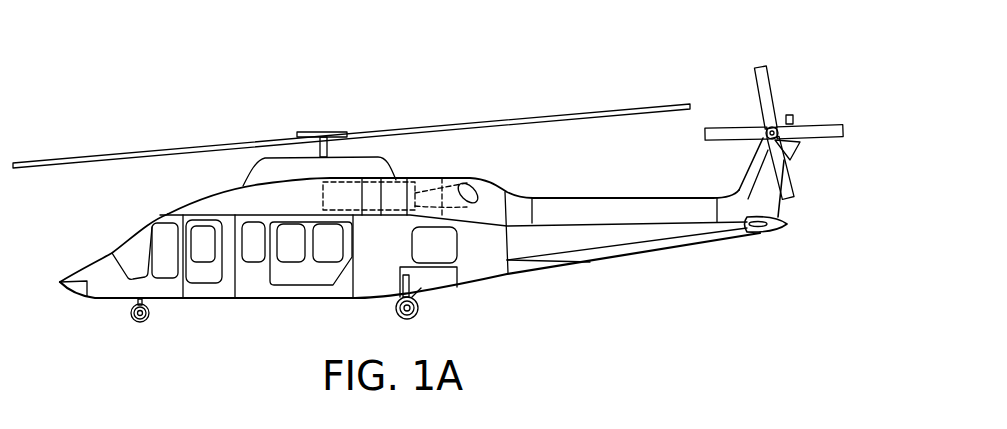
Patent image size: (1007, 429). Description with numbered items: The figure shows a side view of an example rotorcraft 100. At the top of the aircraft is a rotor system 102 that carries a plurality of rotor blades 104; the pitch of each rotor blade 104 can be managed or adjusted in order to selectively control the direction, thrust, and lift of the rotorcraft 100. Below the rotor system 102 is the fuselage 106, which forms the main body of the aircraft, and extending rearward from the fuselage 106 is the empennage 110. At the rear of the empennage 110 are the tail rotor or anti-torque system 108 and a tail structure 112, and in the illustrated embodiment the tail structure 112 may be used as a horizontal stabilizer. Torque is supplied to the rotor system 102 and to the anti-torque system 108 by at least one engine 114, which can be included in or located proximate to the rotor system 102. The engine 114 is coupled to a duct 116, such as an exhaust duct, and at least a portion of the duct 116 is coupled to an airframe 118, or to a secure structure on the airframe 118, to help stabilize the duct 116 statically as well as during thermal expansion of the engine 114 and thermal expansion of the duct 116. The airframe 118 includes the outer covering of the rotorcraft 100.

The rotorcraft 100 is at (207, 69).
The rotor system 102 is at (314, 116).
The rotor blades 104 is at (155, 147).
The fuselage 106 is at (255, 300).
The anti-torque system 108 is at (797, 96).
The empennage 110 is at (642, 258).
The tail structure 112 is at (758, 234).
The engine 114 is at (397, 180).
The duct 116 is at (476, 185).
The airframe 118 is at (432, 178).